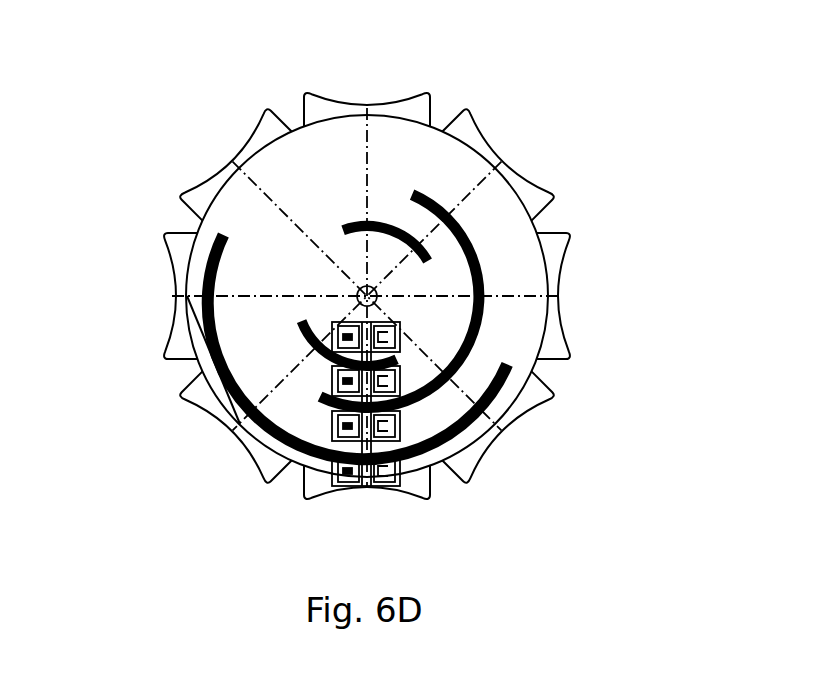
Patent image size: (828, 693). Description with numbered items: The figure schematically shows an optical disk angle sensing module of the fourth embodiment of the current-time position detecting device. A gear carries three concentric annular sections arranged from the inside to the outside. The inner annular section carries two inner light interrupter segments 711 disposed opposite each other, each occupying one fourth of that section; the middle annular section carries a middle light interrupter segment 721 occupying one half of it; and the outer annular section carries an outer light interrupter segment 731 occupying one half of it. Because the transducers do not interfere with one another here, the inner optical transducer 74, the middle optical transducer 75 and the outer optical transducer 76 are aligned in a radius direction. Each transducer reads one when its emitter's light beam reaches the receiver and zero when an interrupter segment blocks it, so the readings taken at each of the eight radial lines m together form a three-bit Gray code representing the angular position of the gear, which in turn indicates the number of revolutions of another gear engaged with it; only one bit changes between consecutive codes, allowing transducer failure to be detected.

The radial lines m is at (255, 180).
The inner light interrupter segment 711 is at (379, 224).
The middle light interrupter segment 721 is at (473, 243).
The outer light interrupter segment 731 is at (212, 367).
The inner optical transducer 74 is at (405, 336).
The middle optical transducer 75 is at (405, 388).
The outer optical transducer 76 is at (401, 481).